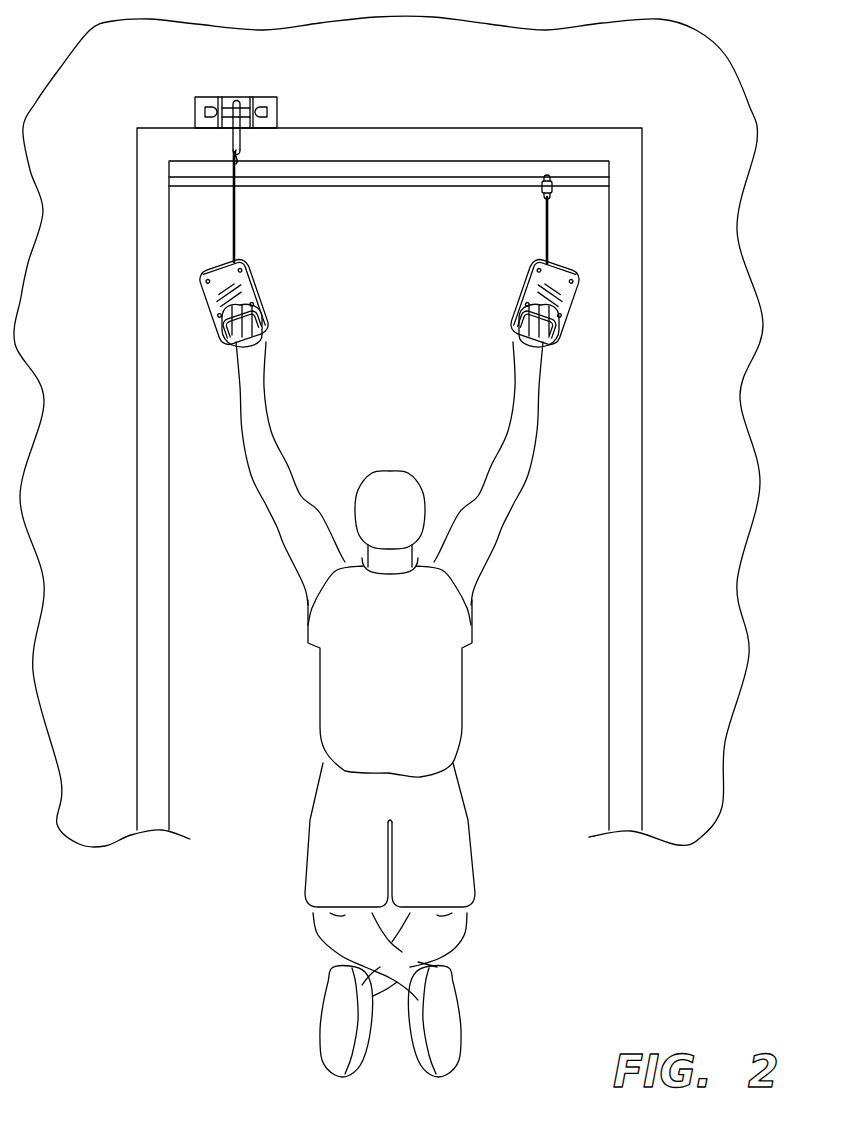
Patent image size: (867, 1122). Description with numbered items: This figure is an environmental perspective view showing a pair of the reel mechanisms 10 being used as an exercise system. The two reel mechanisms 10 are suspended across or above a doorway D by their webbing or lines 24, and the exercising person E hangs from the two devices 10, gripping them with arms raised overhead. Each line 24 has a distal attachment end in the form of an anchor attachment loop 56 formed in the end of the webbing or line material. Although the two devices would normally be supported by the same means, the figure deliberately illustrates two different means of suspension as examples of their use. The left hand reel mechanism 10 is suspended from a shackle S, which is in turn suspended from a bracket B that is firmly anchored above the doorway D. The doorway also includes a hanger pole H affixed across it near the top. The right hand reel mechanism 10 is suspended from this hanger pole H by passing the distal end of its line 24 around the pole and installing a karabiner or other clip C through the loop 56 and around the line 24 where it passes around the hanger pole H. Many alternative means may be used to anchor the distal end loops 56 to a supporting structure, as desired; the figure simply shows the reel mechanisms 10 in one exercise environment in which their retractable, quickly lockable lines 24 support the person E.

The reel mechanism 10 is at (267, 296).
The webbing or line 24 is at (236, 213).
The anchor attachment loop 56 is at (248, 149).
The bracket B is at (271, 94).
The shackle S is at (232, 137).
The karabiner or clip C is at (553, 186).
The hanger pole H is at (401, 190).
The doorway D is at (136, 455).
The exercising person E is at (382, 650).